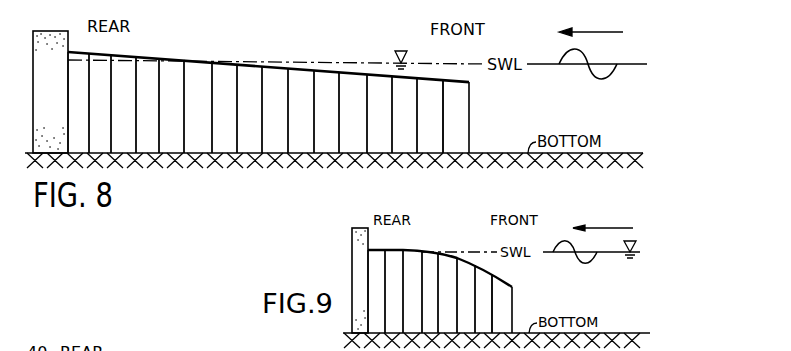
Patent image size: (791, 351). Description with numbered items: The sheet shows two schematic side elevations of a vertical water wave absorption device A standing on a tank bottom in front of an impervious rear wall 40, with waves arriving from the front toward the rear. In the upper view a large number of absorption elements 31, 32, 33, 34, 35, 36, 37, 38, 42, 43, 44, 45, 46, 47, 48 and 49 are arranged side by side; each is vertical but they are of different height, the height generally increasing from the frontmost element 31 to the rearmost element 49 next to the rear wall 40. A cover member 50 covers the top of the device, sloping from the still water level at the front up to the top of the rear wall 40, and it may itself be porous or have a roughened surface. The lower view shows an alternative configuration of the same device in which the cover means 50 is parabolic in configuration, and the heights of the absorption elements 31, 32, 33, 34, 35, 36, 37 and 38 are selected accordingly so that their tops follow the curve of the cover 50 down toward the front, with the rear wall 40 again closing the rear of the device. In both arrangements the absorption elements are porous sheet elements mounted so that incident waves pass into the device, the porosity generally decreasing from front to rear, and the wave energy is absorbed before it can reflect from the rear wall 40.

In FIG. 8, the rear wall 40 is at (36, 30).
In FIG. 9, the rear wall 40 is at (352, 250).
In FIG. 8, the cover member 50 is at (304, 69).
In FIG. 9, the cover member 50 is at (437, 250).
In FIG. 8, the water wave absorption device A is at (185, 57).
In FIG. 8, the absorption element 31 is at (456, 116).
In FIG. 9, the absorption element 31 is at (502, 303).
In FIG. 8, the absorption element 32 is at (430, 115).
In FIG. 9, the absorption element 32 is at (483, 299).
In FIG. 8, the absorption element 33 is at (404, 114).
In FIG. 9, the absorption element 33 is at (466, 295).
In FIG. 8, the absorption element 34 is at (379, 113).
In FIG. 9, the absorption element 34 is at (447, 293).
In FIG. 8, the absorption element 35 is at (353, 112).
In FIG. 9, the absorption element 35 is at (430, 292).
In FIG. 8, the absorption element 36 is at (326, 112).
In FIG. 9, the absorption element 36 is at (412, 291).
In FIG. 8, the absorption element 37 is at (301, 111).
In FIG. 9, the absorption element 37 is at (394, 291).
In FIG. 8, the absorption element 38 is at (275, 110).
In FIG. 9, the absorption element 38 is at (376, 291).
In FIG. 8, the absorption element 42 is at (249, 109).
In FIG. 8, the absorption element 43 is at (224, 108).
In FIG. 8, the absorption element 44 is at (198, 107).
In FIG. 8, the absorption element 45 is at (171, 106).
In FIG. 8, the absorption element 46 is at (147, 105).
In FIG. 8, the absorption element 47 is at (123, 104).
In FIG. 8, the absorption element 48 is at (100, 103).
In FIG. 8, the absorption element 49 is at (78, 102).